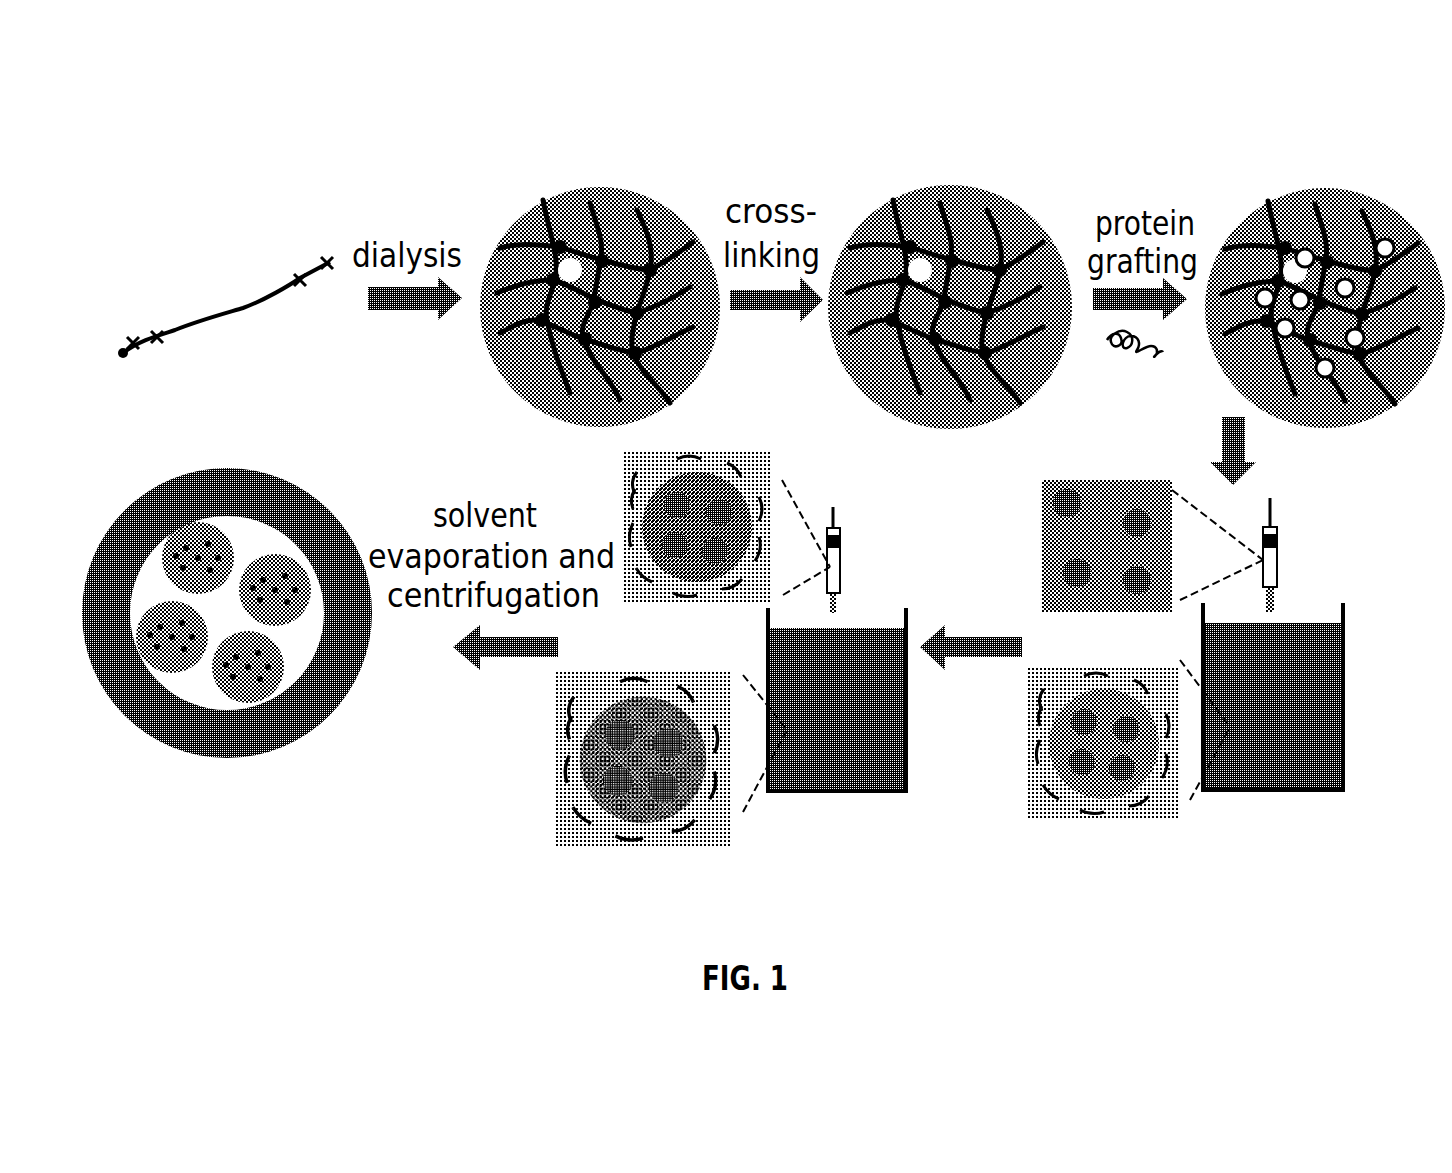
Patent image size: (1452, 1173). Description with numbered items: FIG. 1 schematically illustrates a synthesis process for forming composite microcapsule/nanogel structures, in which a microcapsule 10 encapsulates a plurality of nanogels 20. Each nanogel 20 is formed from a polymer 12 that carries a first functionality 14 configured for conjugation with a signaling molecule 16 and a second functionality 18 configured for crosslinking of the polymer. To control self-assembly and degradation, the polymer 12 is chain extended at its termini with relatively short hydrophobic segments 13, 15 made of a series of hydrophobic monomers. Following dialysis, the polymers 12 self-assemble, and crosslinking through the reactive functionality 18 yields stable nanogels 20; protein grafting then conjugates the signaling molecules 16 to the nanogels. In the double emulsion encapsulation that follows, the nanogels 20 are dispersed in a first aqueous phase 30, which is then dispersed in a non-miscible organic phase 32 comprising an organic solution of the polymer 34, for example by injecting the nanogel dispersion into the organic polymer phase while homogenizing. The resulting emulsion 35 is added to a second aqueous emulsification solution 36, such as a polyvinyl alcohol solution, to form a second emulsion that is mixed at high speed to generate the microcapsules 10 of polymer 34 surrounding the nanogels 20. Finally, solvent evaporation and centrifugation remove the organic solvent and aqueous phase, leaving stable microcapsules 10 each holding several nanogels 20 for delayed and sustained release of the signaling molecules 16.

The microcapsule 10 is at (240, 762).
The polymer 12 is at (215, 307).
The hydrophobic segment 13 is at (298, 295).
The first functionality 14 is at (133, 362).
The hydrophobic segment 15 is at (325, 282).
The signaling molecule 16 is at (1110, 347).
The second functionality 18 is at (327, 252).
The nanogel 20 is at (977, 190).
The first aqueous phase 30 is at (1278, 572).
The organic phase 32 is at (1273, 780).
The polymer 34 is at (1137, 808).
The emulsion 35 is at (843, 570).
The second aqueous emulsification solution 36 is at (823, 780).